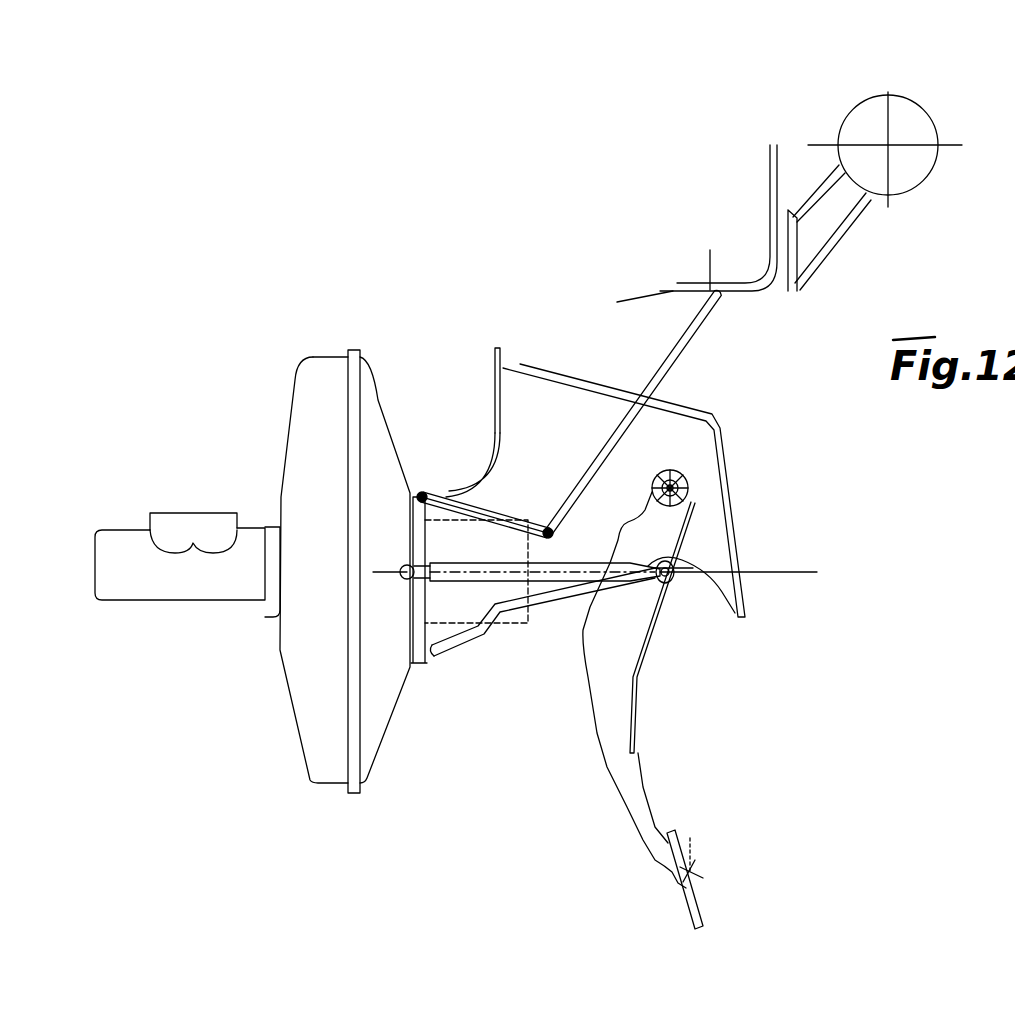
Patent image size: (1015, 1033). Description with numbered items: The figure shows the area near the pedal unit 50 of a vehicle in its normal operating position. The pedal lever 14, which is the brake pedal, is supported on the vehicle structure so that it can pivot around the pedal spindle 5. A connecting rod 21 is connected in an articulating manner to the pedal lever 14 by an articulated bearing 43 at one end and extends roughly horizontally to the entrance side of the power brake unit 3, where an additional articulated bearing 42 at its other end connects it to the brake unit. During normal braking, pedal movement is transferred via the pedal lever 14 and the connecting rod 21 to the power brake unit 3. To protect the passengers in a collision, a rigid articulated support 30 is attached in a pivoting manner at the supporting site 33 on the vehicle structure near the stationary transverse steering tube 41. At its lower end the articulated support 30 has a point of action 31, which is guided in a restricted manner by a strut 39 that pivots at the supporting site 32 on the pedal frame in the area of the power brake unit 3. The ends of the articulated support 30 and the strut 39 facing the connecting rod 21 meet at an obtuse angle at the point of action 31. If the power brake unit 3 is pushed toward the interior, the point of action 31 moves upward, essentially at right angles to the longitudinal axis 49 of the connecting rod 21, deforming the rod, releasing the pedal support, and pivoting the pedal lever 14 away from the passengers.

The power brake unit 3 is at (312, 408).
The pedal spindle 5 is at (683, 488).
The pedal lever 14 is at (627, 648).
The connecting rod 21 is at (553, 577).
The articulated support 30 is at (610, 440).
The point of action 31 is at (562, 533).
The supporting site 32 is at (420, 491).
The supporting site 33 is at (723, 287).
The strut 39 is at (488, 513).
The transverse steering tube 41 is at (907, 178).
The articulated bearing 42 is at (400, 575).
The articulated bearing 43 is at (673, 583).
The longitudinal axis 49 is at (503, 572).
The pedal unit 50 is at (544, 390).